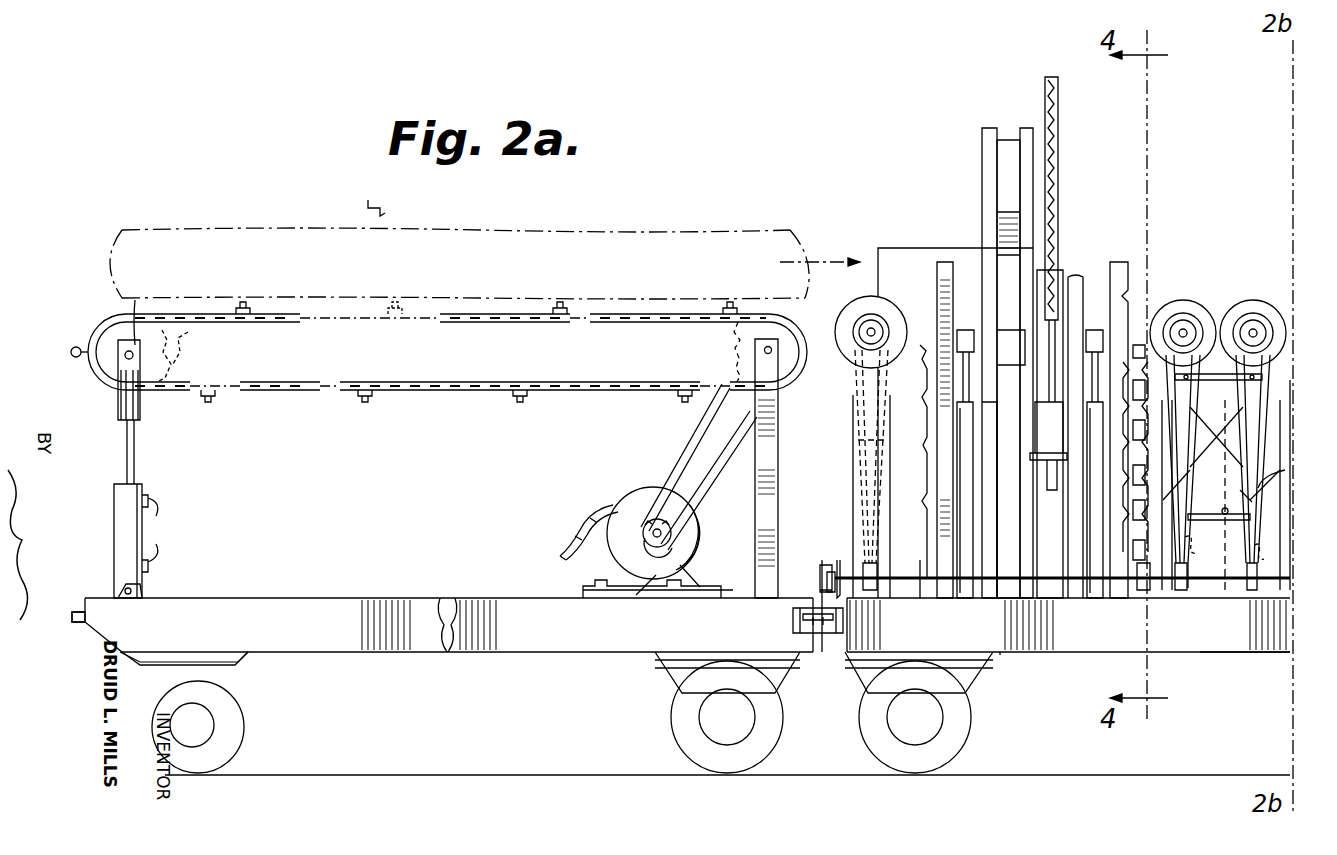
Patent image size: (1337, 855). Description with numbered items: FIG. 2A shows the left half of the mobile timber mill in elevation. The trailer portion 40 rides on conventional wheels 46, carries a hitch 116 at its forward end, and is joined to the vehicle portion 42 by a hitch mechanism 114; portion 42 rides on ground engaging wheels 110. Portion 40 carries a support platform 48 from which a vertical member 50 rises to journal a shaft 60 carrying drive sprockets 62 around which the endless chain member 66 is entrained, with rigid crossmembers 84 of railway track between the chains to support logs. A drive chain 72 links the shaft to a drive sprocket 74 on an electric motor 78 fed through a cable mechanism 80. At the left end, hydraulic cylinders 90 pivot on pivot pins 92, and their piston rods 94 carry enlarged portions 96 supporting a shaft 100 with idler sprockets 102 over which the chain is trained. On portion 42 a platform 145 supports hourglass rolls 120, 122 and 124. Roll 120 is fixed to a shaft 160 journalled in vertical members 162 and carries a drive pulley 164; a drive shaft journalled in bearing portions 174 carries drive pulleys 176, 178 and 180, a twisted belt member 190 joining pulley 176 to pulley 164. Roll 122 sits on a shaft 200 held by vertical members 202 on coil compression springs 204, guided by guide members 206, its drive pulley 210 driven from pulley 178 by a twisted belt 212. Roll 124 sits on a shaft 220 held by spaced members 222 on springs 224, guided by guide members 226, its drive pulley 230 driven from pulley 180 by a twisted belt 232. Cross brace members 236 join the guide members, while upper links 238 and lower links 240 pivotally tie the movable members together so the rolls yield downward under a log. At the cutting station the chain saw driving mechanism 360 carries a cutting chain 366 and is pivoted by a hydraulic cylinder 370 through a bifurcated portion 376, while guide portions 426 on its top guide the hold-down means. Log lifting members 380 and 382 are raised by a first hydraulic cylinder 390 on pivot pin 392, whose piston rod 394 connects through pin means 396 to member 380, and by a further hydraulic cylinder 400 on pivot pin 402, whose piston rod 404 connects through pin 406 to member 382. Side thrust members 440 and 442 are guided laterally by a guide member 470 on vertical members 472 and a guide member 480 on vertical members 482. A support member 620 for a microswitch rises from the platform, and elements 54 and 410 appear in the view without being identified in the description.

The portion of the timber mill 40 is at (417, 675).
The vehicle portion 42 is at (1228, 668).
The wheels 46 is at (228, 728).
The support platform 48 is at (345, 598).
The member 50 is at (770, 480).
The support bracket 54 is at (780, 598).
The shaft 60 is at (773, 355).
The sprockets 62 is at (712, 352).
The chain member 66 is at (600, 314).
The drive chain 72 is at (678, 460).
The drive sprocket 74 is at (672, 534).
The electric motor 78 is at (632, 500).
The cable mechanism 80 is at (580, 527).
The rigid members 84 is at (248, 306).
The hydraulic cylinders 90 is at (133, 540).
The pivot pins 92 is at (142, 585).
The piston rods 94 is at (154, 452).
The enlarged portions 96 is at (134, 365).
The shaft 100 is at (155, 308).
The idler sprockets 102 is at (189, 306).
The ground engaging wheels 110 is at (958, 718).
The hitch mechanism 114 is at (831, 663).
The hitch 116 is at (57, 633).
The roll 120 is at (891, 290).
The roll 122 is at (1194, 289).
The roll 124 is at (1266, 289).
The platform portion 145 is at (1026, 652).
The shaft 160 is at (875, 330).
The vertically extending members 162 is at (853, 465).
The drive pulley 164 is at (840, 325).
The bearing portions 174 is at (822, 565).
The drive pulley 176 is at (872, 592).
The drive pulley 178 is at (1182, 592).
The drive pulley 180 is at (1252, 592).
The belt member 190 is at (872, 510).
The shaft 200 is at (1180, 328).
The vertically extending spaced members 202 is at (1176, 553).
The coil compression springs 204 is at (1192, 572).
The guide members 206 is at (1165, 552).
The drive pulley 210 is at (1176, 325).
The twisted belt 212 is at (1190, 410).
The shaft 220 is at (1250, 328).
The spaced members 222 is at (1226, 493).
The coil compression springs 224 is at (1252, 562).
The guide members 226 is at (1258, 555).
The drive pulley 230 is at (1246, 325).
The twisted belt 232 is at (1252, 392).
The cross brace members 236 is at (1221, 453).
The upper links 238 is at (1200, 377).
The lower links 240 is at (1262, 528).
The chain saw driving mechanism 360 is at (924, 233).
The cutting chain 366 is at (1062, 198).
The hydraulic cylinder 370 is at (1048, 435).
The bifurcated portion 376 is at (1073, 286).
The log lifting member 380 is at (963, 330).
The log lifting member 382 is at (1094, 330).
The first hydraulic cylinder 390 is at (968, 510).
The pivot pin 392 is at (960, 598).
The piston rod 394 is at (970, 380).
The pin means 396 is at (985, 352).
The hydraulic cylinder 400 is at (1118, 478).
The pivot pin 402 is at (1065, 598).
The piston rod 404 is at (1112, 400).
The pin 406 is at (1098, 378).
The cylinder 410 is at (1003, 138).
The guide portions 426 is at (984, 140).
The side thrust member 440 is at (945, 262).
The side thrust member 442 is at (1120, 278).
The guide member 470 is at (907, 462).
The vertically extending members 472 is at (920, 486).
The guide member 480 is at (1138, 345).
The vertically extending members 482 is at (1133, 455).
The support member 620 is at (1219, 493).